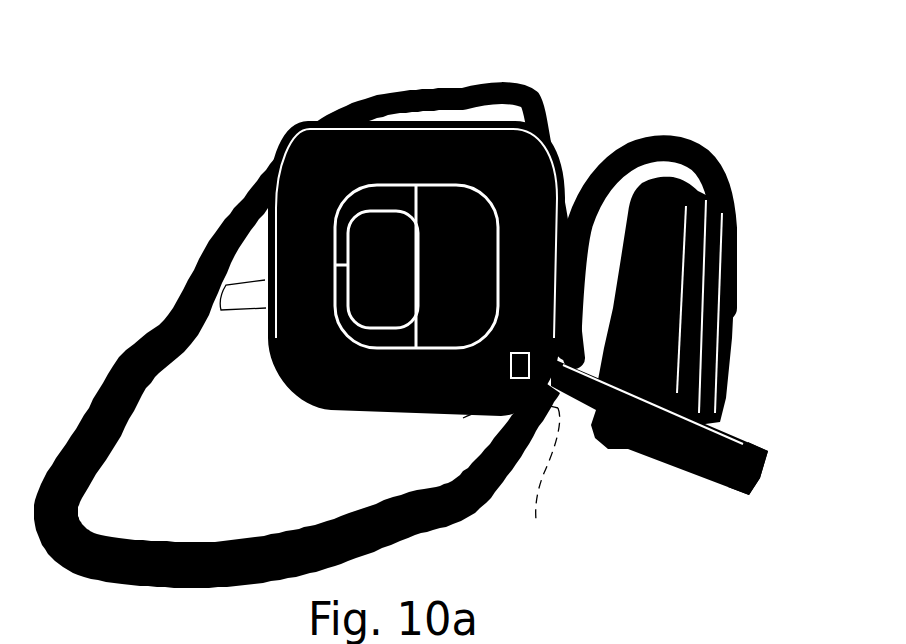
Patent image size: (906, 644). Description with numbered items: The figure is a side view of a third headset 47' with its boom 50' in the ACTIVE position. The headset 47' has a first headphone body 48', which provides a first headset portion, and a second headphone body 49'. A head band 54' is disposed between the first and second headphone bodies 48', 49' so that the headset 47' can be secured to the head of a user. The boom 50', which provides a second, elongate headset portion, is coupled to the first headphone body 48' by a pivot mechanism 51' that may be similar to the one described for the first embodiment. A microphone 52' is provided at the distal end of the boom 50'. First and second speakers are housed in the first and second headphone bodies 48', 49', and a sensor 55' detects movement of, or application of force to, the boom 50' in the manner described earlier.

The third headset 47' is at (444, 313).
The first headphone body 48' is at (408, 302).
The second headphone body 49' is at (728, 301).
The boom 50' is at (659, 460).
The pivot mechanism 51' is at (557, 485).
The microphone 52' is at (793, 435).
The head band 54' is at (302, 338).
The sensor 55' is at (484, 443).